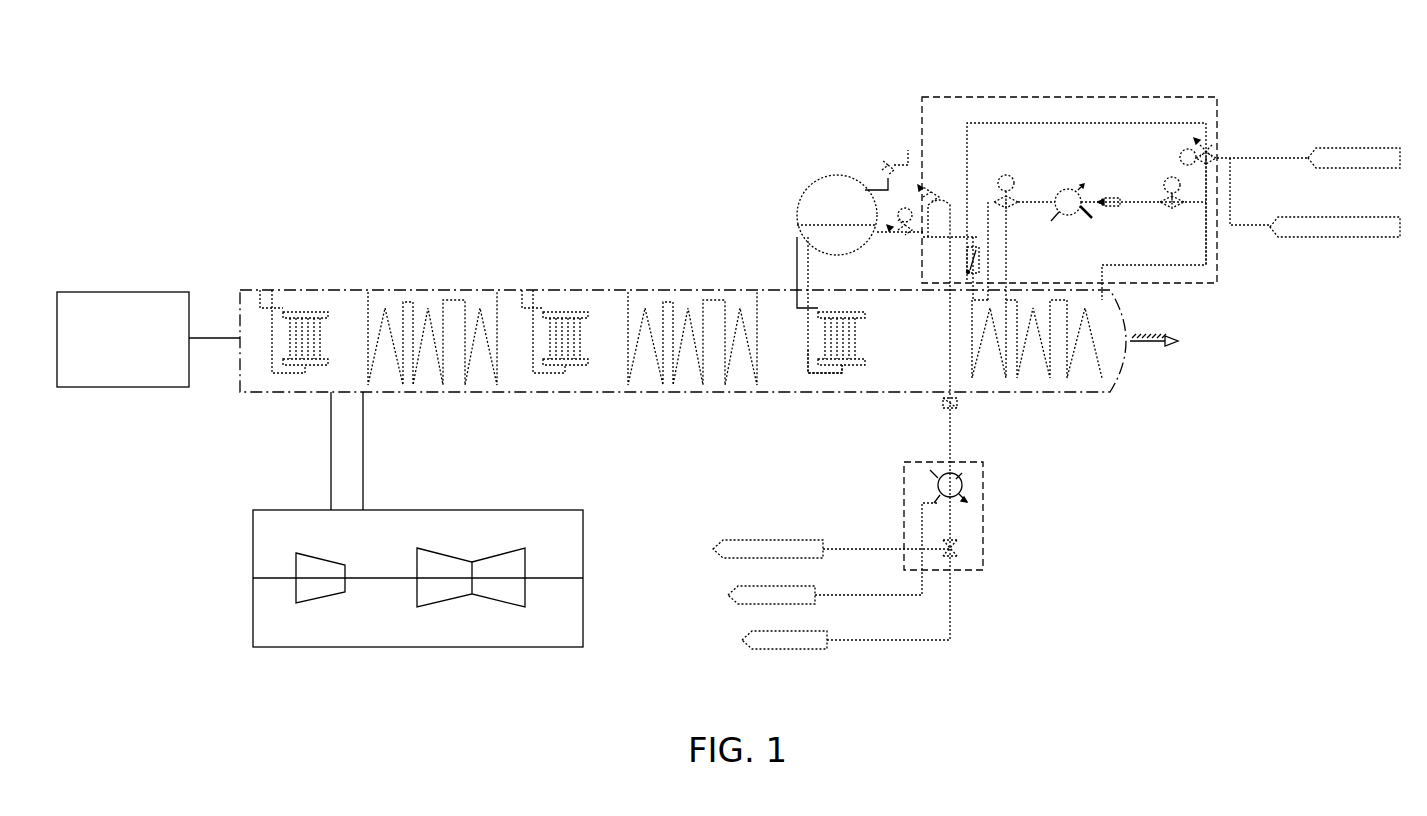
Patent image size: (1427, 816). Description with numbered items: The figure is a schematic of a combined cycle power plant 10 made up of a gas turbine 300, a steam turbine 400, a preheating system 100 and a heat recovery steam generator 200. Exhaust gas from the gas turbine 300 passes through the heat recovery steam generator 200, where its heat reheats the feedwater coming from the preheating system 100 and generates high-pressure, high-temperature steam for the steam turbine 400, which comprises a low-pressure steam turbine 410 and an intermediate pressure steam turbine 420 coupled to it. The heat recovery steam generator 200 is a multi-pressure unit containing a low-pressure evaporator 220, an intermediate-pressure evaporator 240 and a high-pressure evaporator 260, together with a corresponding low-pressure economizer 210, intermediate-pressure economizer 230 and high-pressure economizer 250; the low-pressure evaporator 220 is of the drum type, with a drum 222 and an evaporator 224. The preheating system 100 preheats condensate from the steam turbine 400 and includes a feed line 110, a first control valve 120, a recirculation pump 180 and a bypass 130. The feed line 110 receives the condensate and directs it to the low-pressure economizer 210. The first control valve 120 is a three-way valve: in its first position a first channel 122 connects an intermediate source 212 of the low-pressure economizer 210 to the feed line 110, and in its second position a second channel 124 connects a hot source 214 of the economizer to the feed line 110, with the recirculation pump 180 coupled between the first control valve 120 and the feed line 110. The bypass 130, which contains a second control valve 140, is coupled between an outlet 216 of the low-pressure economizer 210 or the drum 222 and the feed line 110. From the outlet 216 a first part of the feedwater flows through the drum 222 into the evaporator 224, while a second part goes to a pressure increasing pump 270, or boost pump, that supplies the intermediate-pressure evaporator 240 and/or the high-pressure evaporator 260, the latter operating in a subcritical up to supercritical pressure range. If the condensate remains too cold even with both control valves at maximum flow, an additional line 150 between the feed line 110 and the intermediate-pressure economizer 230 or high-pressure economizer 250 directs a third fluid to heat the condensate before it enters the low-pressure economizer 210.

The combined cycle power plant 10 is at (1375, 88).
The preheating system 100 is at (1170, 97).
The feed line 110 is at (1205, 240).
The first control valve 120 is at (1087, 195).
The first channel 122 is at (1006, 210).
The second channel 124 is at (995, 198).
The bypass 130 is at (1060, 123).
The second control valve 140 is at (1210, 150).
The additional line 150 is at (1248, 222).
The recirculation pump 180 is at (1091, 216).
The heat recovery steam generator 200 is at (1130, 372).
The low-pressure economizer 210 is at (1067, 375).
The intermediate source 212 is at (1000, 292).
The hot source 214 is at (973, 300).
The outlet 216 is at (946, 206).
The low-pressure evaporator 220 is at (842, 312).
The drum 222 is at (822, 178).
The evaporator 224 is at (848, 355).
The intermediate-pressure economizer 230 is at (663, 302).
The intermediate-pressure evaporator 240 is at (565, 312).
The high-pressure economizer 250 is at (407, 302).
The high-pressure evaporator 260 is at (305, 312).
The pressure increasing pump 270 is at (953, 470).
The gas turbine 300 is at (108, 292).
The steam turbine 400 is at (442, 510).
The low-pressure steam turbine 410 is at (478, 560).
The intermediate pressure steam turbine 420 is at (322, 563).